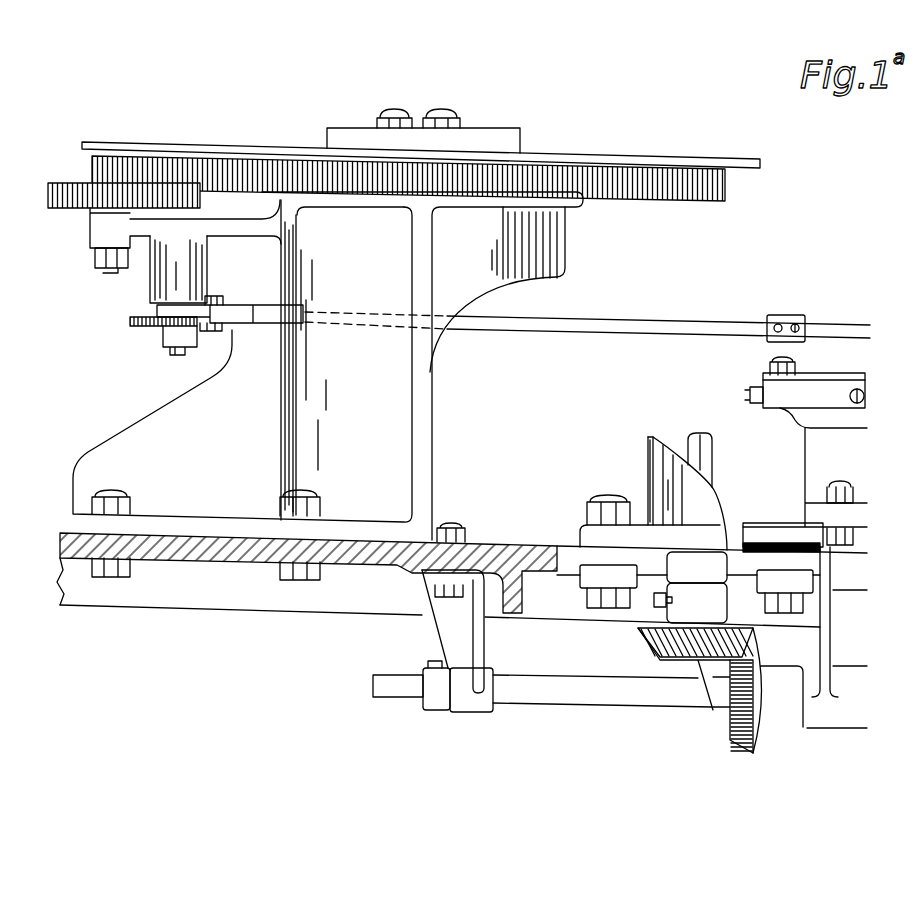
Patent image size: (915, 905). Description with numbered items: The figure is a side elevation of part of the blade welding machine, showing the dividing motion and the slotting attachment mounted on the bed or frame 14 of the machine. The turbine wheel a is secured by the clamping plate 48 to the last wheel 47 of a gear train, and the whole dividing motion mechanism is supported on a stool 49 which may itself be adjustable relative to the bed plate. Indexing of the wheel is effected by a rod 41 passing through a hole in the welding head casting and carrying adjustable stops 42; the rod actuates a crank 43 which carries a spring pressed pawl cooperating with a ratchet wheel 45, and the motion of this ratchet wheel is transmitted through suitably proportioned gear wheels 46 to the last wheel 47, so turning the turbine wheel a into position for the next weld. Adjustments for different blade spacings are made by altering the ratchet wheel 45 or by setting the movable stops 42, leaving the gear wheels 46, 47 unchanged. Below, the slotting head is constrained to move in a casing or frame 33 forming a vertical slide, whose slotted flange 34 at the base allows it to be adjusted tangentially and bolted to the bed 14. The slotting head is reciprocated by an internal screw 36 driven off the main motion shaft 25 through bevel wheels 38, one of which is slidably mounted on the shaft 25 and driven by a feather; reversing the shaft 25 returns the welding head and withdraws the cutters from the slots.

The turbine wheel a is at (598, 160).
The last wheel of the train 47 is at (228, 160).
The clamping plate 48 is at (488, 142).
The gear wheels 46 is at (78, 204).
The ratchet wheel 45 is at (146, 327).
The crank 43 is at (226, 323).
The rod 41 is at (701, 329).
The adjustable stops 42 is at (798, 325).
The stool 49 is at (328, 366).
The casing or frame 33 is at (658, 470).
The slotted flange 34 is at (657, 538).
The internal screw 36 is at (708, 455).
The bed or frame 14 is at (515, 552).
The main motion shaft 25 is at (588, 700).
The bevel wheels 38 is at (731, 725).